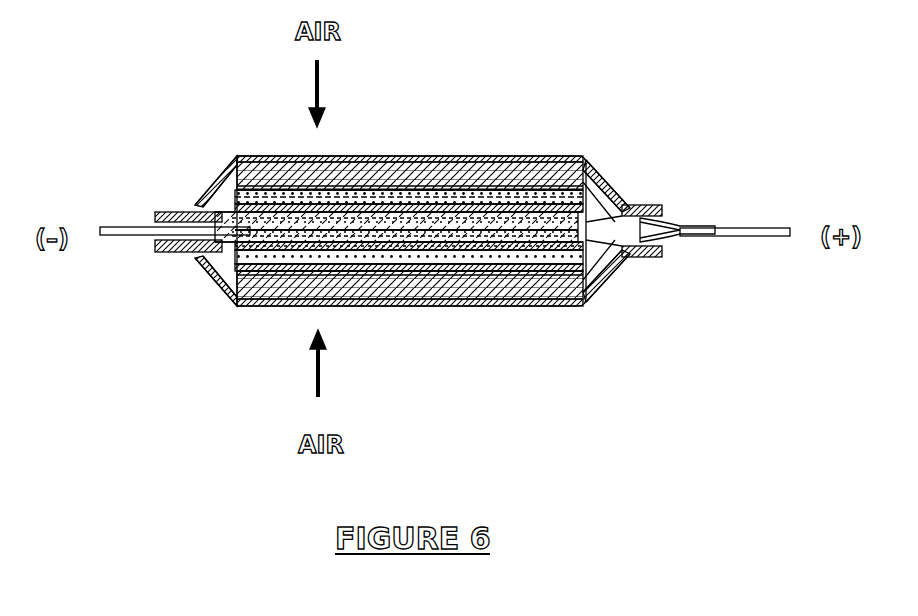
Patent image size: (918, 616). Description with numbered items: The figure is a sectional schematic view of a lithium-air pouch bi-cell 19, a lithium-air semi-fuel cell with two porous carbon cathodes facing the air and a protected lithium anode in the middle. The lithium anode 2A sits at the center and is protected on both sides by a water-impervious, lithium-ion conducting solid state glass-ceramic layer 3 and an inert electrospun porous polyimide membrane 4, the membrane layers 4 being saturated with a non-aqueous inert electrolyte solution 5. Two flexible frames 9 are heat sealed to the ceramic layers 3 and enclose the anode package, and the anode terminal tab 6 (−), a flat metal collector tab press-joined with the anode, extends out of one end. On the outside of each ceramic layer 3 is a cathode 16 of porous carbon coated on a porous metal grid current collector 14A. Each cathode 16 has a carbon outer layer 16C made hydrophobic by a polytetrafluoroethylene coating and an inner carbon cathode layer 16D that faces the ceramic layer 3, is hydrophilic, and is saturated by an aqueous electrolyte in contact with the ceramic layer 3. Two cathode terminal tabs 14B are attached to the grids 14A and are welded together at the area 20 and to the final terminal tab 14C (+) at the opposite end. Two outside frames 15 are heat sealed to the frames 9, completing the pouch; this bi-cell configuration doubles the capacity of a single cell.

The lithium anode 2A is at (460, 306).
The lithium-ion conducting solid state glass-ceramic layer 3 is at (427, 157).
The electrospun porous polyimide membrane 4 is at (465, 157).
The electrolyte solution 5 is at (405, 227).
The metal collector tab 6 is at (120, 242).
The flexible top frame 9 is at (207, 183).
The porous metal grid current collector 14A is at (358, 156).
The cathode terminal tab 14B is at (682, 217).
The final terminal tab 14C is at (777, 240).
The outside frame 15 is at (247, 156).
The cathode 16 is at (493, 156).
The carbon outer layer 16C is at (527, 156).
The inner carbon cathode layer 16D is at (402, 158).
The lithium-air bi-cell 19 is at (722, 451).
The welded area 20 is at (707, 227).